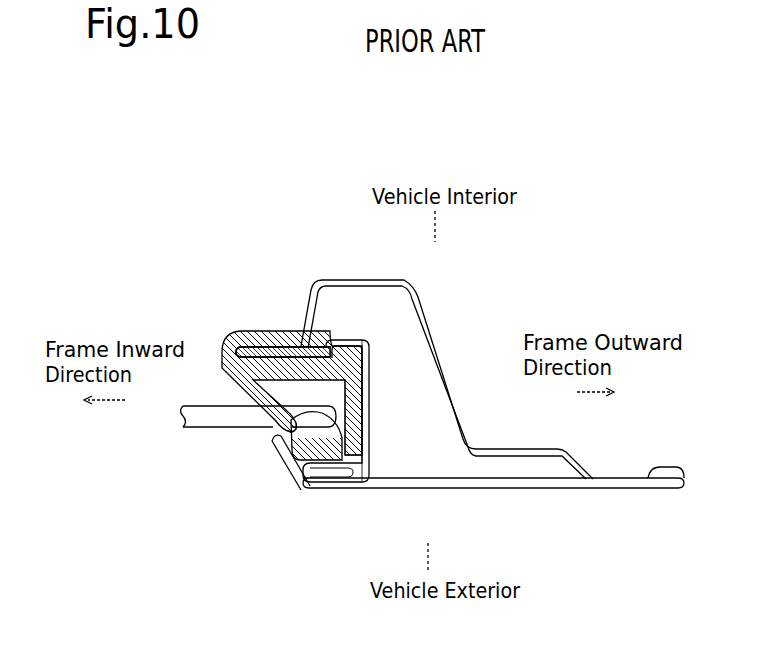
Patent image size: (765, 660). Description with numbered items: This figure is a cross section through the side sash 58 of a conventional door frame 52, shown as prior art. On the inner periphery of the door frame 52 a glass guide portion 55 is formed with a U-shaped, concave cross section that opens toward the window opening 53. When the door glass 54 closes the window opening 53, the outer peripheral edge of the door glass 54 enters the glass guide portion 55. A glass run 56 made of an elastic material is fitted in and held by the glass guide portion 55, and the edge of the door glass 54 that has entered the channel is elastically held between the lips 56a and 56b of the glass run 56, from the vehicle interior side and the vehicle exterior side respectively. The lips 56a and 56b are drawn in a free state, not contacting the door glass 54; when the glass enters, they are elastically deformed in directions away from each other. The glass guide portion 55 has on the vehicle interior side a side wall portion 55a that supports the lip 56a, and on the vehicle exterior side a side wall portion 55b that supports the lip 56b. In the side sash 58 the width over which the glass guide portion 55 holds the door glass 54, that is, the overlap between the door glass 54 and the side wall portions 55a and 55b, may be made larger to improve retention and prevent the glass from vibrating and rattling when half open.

The door frame 52 is at (492, 417).
The side sash 58 is at (532, 490).
The glass guide portion 55 is at (327, 405).
The side wall portion 55a is at (272, 347).
The side wall portion 55b is at (327, 483).
The glass run 56 is at (311, 395).
The lip 56a is at (272, 435).
The lip 56b is at (367, 442).
The door glass 54 is at (228, 428).
The window opening 53 is at (293, 489).